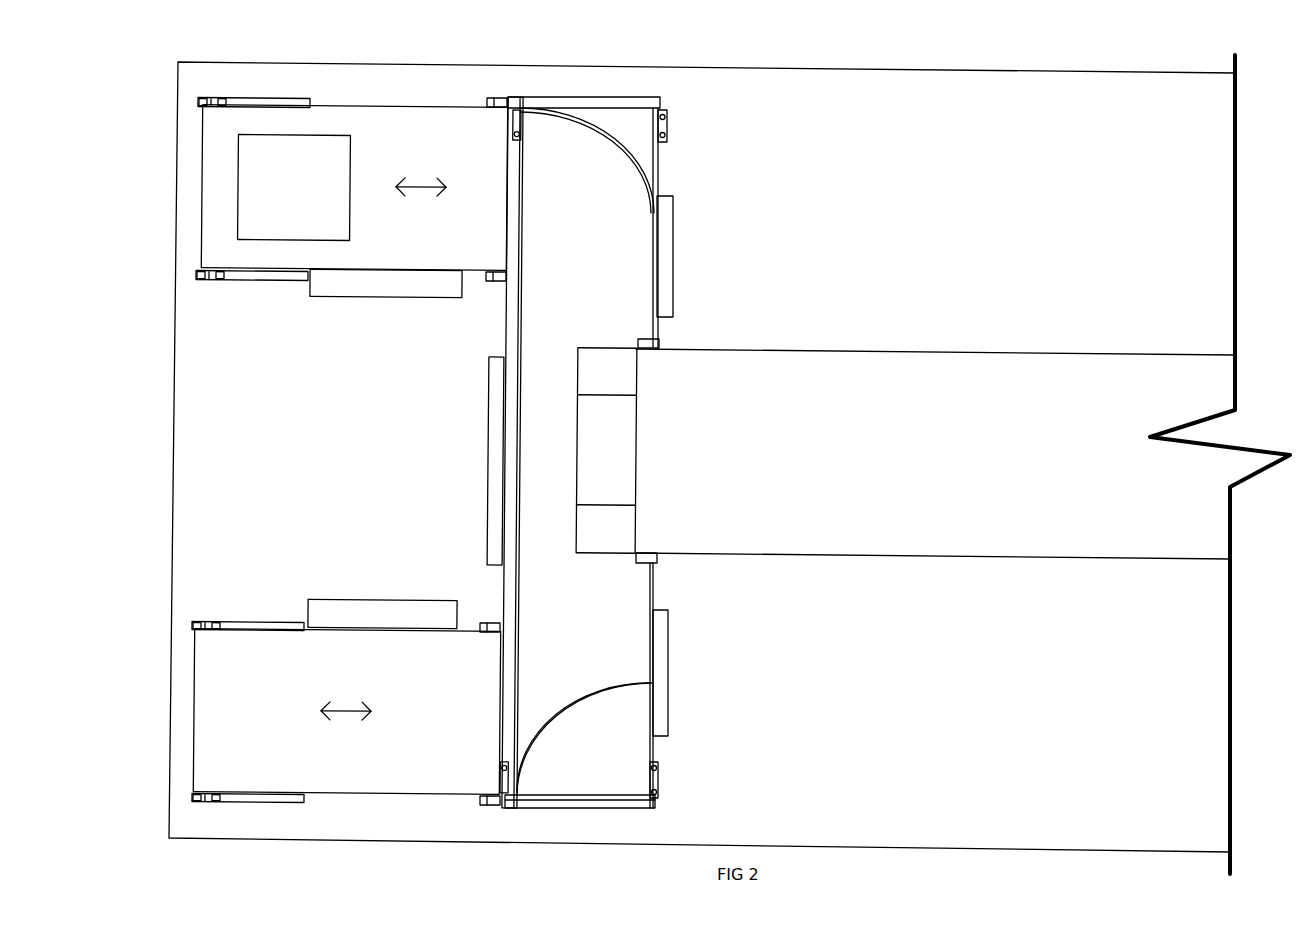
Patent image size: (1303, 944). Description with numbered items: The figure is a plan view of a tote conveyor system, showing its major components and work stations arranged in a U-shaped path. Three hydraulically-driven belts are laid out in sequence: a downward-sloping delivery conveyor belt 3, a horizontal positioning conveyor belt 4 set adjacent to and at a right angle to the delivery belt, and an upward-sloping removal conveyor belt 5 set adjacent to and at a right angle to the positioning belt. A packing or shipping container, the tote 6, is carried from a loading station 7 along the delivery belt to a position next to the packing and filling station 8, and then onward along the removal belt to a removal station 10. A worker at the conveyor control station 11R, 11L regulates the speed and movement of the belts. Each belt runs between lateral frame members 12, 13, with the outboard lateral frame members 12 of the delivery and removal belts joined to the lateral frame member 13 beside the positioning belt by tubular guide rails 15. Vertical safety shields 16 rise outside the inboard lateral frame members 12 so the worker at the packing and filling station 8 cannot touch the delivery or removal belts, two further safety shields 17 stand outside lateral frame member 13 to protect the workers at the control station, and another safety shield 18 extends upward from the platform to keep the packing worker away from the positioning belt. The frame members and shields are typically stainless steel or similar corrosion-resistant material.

The delivery conveyor belt 3 is at (395, 103).
The positioning conveyor belt 4 is at (573, 747).
The removal conveyor belt 5 is at (395, 742).
The tote 6 is at (279, 147).
The loading station 7 is at (330, 143).
The packing and filling station 8 is at (464, 452).
The removal station 10 is at (319, 756).
The conveyor control station 11L is at (703, 245).
The conveyor control station 11R is at (680, 721).
The lateral frame member 12 is at (347, 103).
The lateral frame member 13 is at (657, 325).
The tubular guide rail 15 is at (618, 140).
The safety shield 16 is at (378, 286).
The safety shield 17 is at (667, 230).
The safety shield 18 is at (495, 478).